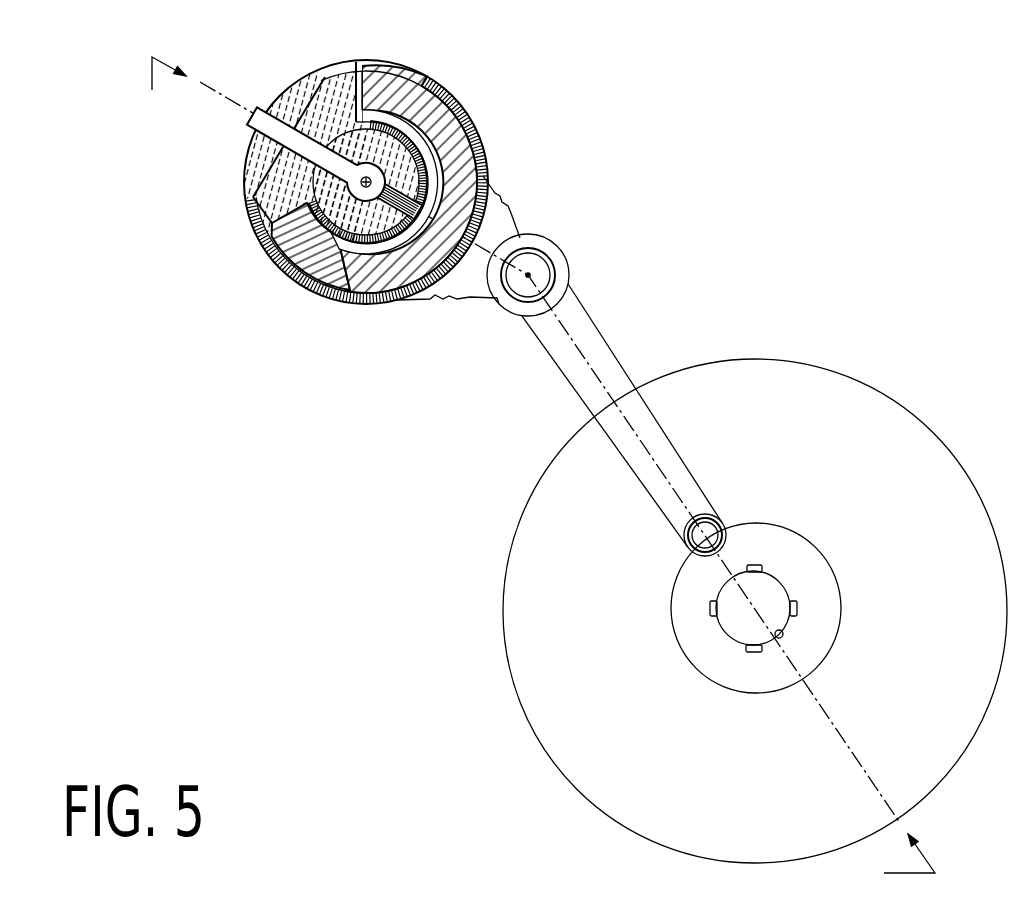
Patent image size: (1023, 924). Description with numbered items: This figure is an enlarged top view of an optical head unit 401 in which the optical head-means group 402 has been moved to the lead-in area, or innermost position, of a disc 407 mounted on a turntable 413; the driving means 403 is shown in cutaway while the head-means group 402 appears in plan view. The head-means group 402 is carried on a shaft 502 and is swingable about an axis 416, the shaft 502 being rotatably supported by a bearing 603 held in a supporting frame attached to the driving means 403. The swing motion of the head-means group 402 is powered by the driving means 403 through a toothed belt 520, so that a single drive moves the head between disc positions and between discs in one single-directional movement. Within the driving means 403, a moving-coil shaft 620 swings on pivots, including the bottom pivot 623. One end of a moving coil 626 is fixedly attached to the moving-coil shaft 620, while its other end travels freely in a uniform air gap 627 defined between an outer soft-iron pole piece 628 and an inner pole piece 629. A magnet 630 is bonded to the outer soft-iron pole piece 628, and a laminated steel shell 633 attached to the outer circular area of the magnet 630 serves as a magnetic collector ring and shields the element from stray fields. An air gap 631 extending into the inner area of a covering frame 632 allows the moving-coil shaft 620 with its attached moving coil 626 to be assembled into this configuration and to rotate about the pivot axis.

The optical head unit 401 is at (540, 475).
The optical head-means group 402 is at (624, 443).
The driving means 403 is at (273, 182).
The disc 407 is at (719, 611).
The turntable 413 is at (776, 594).
The axis 416 is at (509, 308).
The shaft 502 is at (531, 248).
The toothed belt 520 is at (458, 260).
The bearing 603 is at (548, 275).
The moving-coil shaft 620 is at (408, 157).
The bottom pivot 623 is at (334, 140).
The moving coil 626 is at (367, 178).
The uniform air gap 627 is at (373, 230).
The outer soft-iron pole piece 628 is at (337, 75).
The inner pole piece 629 is at (308, 180).
The magnet 630 is at (284, 256).
The air gap 631 is at (261, 137).
The covering frame 632 is at (278, 181).
The laminated steel shell 633 is at (231, 223).